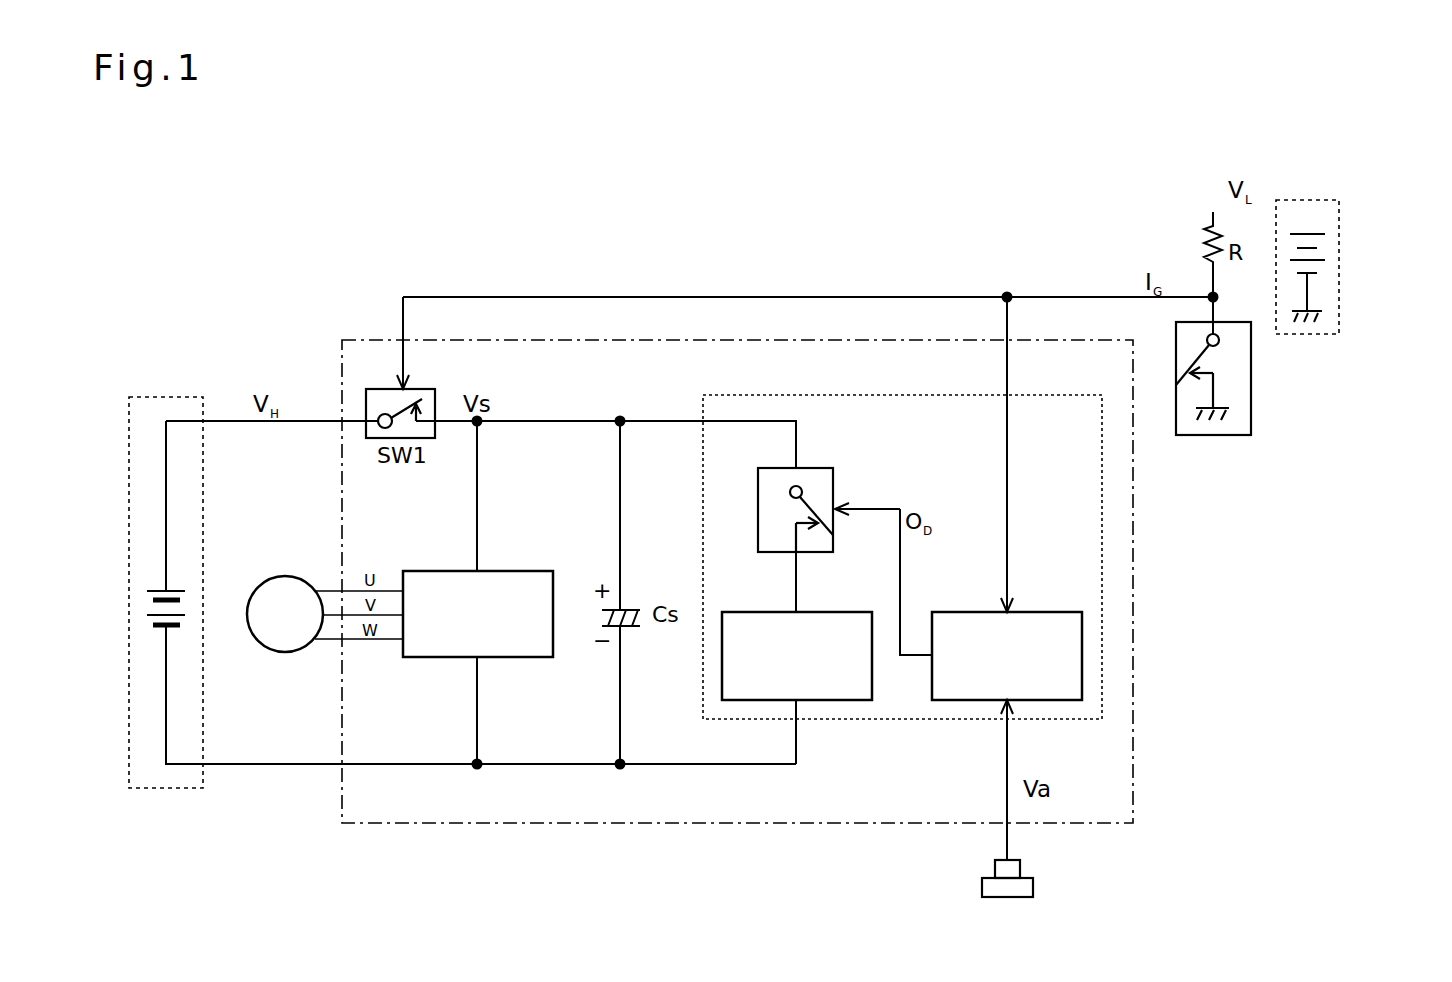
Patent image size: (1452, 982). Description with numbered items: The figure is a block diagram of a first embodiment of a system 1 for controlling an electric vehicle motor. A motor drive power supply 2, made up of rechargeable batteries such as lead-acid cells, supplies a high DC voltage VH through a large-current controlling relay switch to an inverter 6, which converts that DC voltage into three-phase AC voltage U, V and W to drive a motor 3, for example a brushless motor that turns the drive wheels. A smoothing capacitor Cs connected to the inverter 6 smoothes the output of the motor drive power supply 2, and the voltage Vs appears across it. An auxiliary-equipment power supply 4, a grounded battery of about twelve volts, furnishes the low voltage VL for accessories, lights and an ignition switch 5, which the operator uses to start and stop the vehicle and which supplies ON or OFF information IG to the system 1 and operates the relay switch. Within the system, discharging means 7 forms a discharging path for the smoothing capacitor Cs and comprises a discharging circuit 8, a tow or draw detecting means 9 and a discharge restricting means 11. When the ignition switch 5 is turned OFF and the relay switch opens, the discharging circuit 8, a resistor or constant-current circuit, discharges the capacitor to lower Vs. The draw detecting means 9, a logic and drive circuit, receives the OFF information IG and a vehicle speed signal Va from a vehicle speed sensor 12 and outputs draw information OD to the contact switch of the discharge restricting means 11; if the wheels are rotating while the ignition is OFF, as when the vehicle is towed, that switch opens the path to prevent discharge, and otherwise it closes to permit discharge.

The system for controlling an electric vehicle motor 1 is at (481, 335).
The motor drive power supply 2 is at (166, 397).
The motor 3 is at (285, 652).
The auxiliary-equipment power supply 4 is at (1306, 200).
The ignition switch 5 is at (1213, 435).
The inverter 6 is at (505, 571).
The discharging means 7 is at (897, 719).
The discharging circuit 8 is at (822, 612).
The tow or draw detecting means 9 is at (1033, 612).
The discharge restricting means 11 is at (807, 467).
The vehicle speed sensor 12 is at (1033, 885).